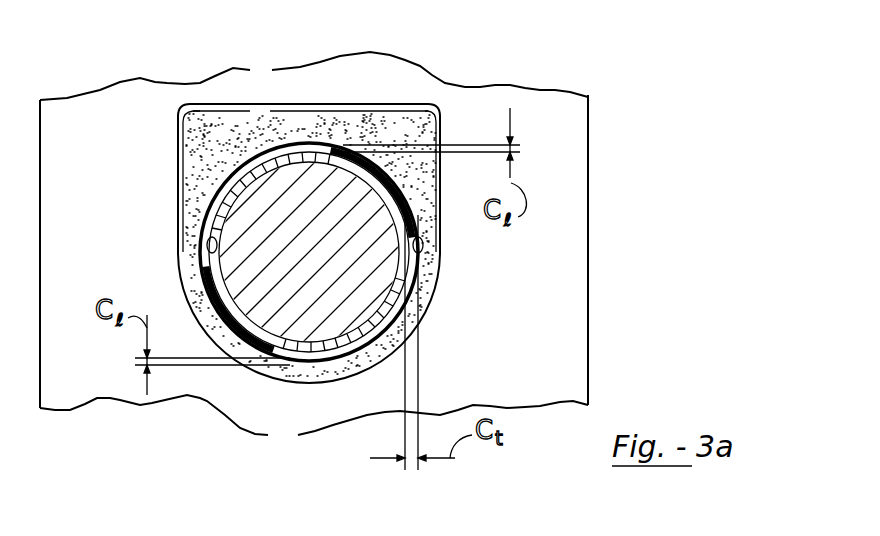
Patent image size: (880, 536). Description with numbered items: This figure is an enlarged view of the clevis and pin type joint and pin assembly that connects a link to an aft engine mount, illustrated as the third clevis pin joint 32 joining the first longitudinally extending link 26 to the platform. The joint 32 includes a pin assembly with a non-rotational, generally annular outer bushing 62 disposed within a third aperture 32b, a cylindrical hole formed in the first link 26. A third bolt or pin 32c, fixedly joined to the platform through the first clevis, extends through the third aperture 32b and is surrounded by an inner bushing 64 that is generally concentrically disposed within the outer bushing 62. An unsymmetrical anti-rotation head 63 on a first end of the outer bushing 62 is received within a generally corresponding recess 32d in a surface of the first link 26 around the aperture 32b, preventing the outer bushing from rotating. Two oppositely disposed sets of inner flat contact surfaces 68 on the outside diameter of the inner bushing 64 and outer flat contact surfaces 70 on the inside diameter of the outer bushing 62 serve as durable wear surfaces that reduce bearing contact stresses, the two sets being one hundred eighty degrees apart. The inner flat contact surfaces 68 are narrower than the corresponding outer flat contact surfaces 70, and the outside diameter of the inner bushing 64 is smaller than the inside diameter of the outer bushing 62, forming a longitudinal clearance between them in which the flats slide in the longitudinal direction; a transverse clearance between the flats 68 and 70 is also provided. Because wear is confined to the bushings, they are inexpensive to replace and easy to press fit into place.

The first longitudinally extending link 26 is at (589, 312).
The third clevis pin joint 32 is at (299, 218).
The third aperture 32b is at (181, 119).
The third bolt or pin 32c is at (235, 246).
The recess 32d is at (440, 117).
The outer bushing 62 is at (432, 303).
The anti-rotation head 63 is at (437, 104).
The inner bushing 64 is at (370, 358).
The inner flat contact surfaces 68 is at (208, 270).
The outer flat contact surfaces 70 is at (200, 262).